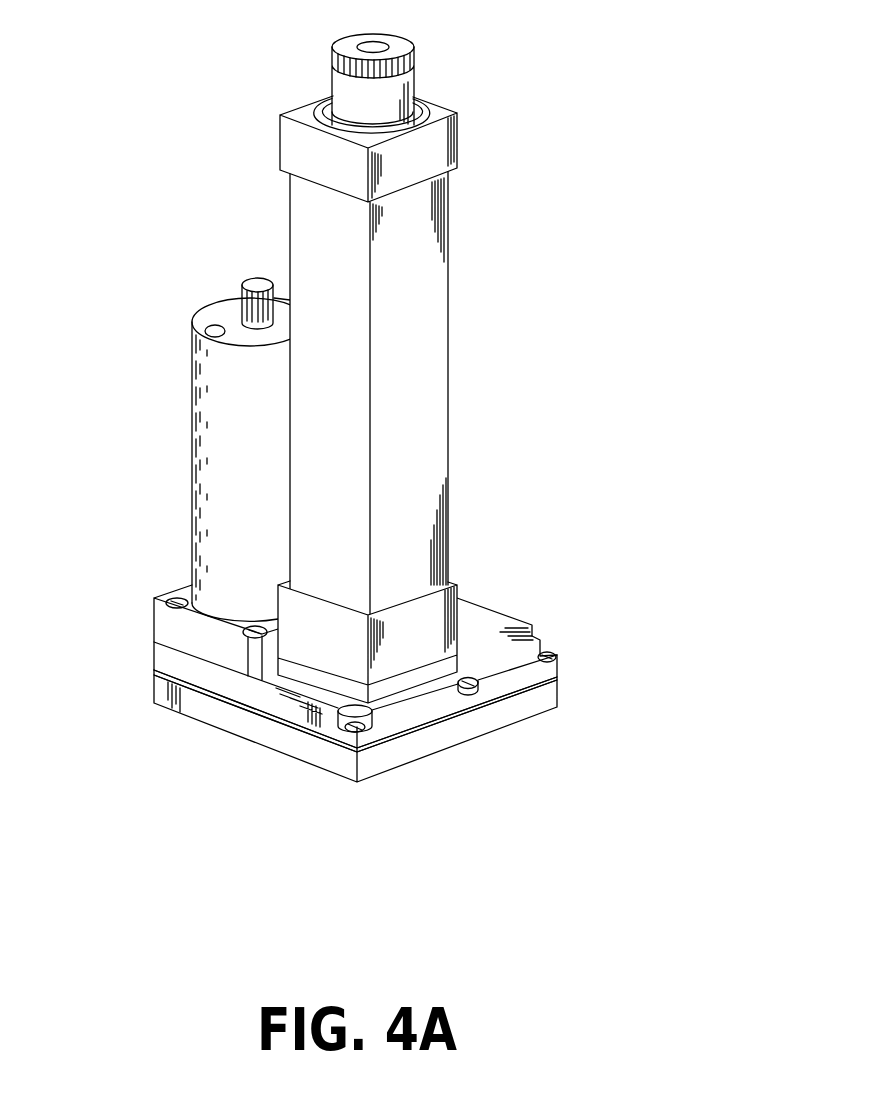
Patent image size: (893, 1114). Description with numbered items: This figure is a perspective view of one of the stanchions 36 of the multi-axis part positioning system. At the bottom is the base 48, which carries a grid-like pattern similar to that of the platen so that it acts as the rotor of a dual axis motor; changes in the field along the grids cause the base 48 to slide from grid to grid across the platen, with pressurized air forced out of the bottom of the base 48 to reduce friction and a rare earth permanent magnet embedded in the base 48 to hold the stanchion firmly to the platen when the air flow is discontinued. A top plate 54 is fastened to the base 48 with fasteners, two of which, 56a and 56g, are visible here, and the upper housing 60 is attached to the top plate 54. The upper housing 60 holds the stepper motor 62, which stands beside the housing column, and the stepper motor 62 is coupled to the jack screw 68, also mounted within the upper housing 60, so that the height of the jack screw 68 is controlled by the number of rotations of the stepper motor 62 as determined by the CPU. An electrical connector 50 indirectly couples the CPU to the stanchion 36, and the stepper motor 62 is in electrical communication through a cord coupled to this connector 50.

The stanchion 36 is at (542, 380).
The jack screw 68 is at (430, 62).
The stepper motor 62 is at (186, 355).
The upper housing 60 is at (175, 630).
The electrical connector 50 is at (478, 612).
The top plate 54 is at (282, 702).
The base 48 is at (546, 697).
The fastener 56a is at (369, 737).
The fastener 56g is at (472, 693).